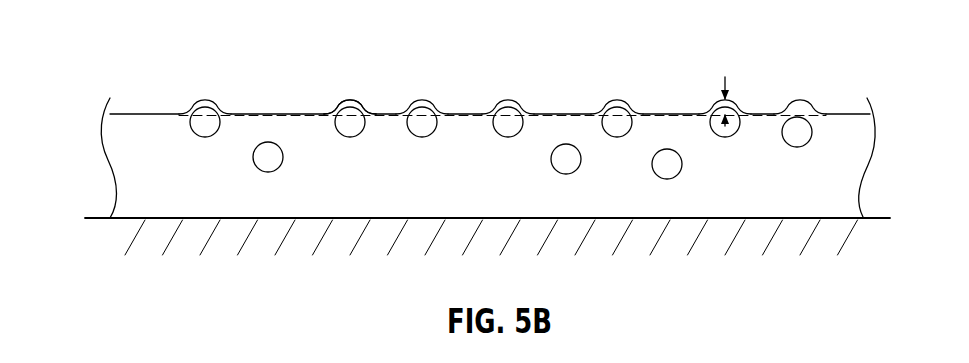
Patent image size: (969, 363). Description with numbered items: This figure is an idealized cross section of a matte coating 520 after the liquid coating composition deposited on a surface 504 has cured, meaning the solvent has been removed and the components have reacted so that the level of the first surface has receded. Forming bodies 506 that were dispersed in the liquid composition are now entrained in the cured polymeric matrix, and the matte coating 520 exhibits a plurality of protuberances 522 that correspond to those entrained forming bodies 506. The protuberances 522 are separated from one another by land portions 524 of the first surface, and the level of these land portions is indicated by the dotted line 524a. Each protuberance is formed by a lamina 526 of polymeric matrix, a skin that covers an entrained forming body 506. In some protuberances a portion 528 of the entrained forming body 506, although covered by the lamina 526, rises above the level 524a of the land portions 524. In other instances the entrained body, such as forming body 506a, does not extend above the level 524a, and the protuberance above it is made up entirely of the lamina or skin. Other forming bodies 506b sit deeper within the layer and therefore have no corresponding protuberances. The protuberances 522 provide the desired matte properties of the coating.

The surface 504 is at (880, 217).
The matte coating 520 is at (132, 73).
The protuberances 522 is at (203, 100).
The portion of an entrained forming body 528 is at (358, 103).
The level of the land portions 524a is at (442, 112).
The land portions 524 is at (670, 113).
The lamina 526 is at (730, 84).
The forming bodies 506 is at (205, 137).
The forming body 506a is at (796, 147).
The forming bodies 506b is at (551, 157).